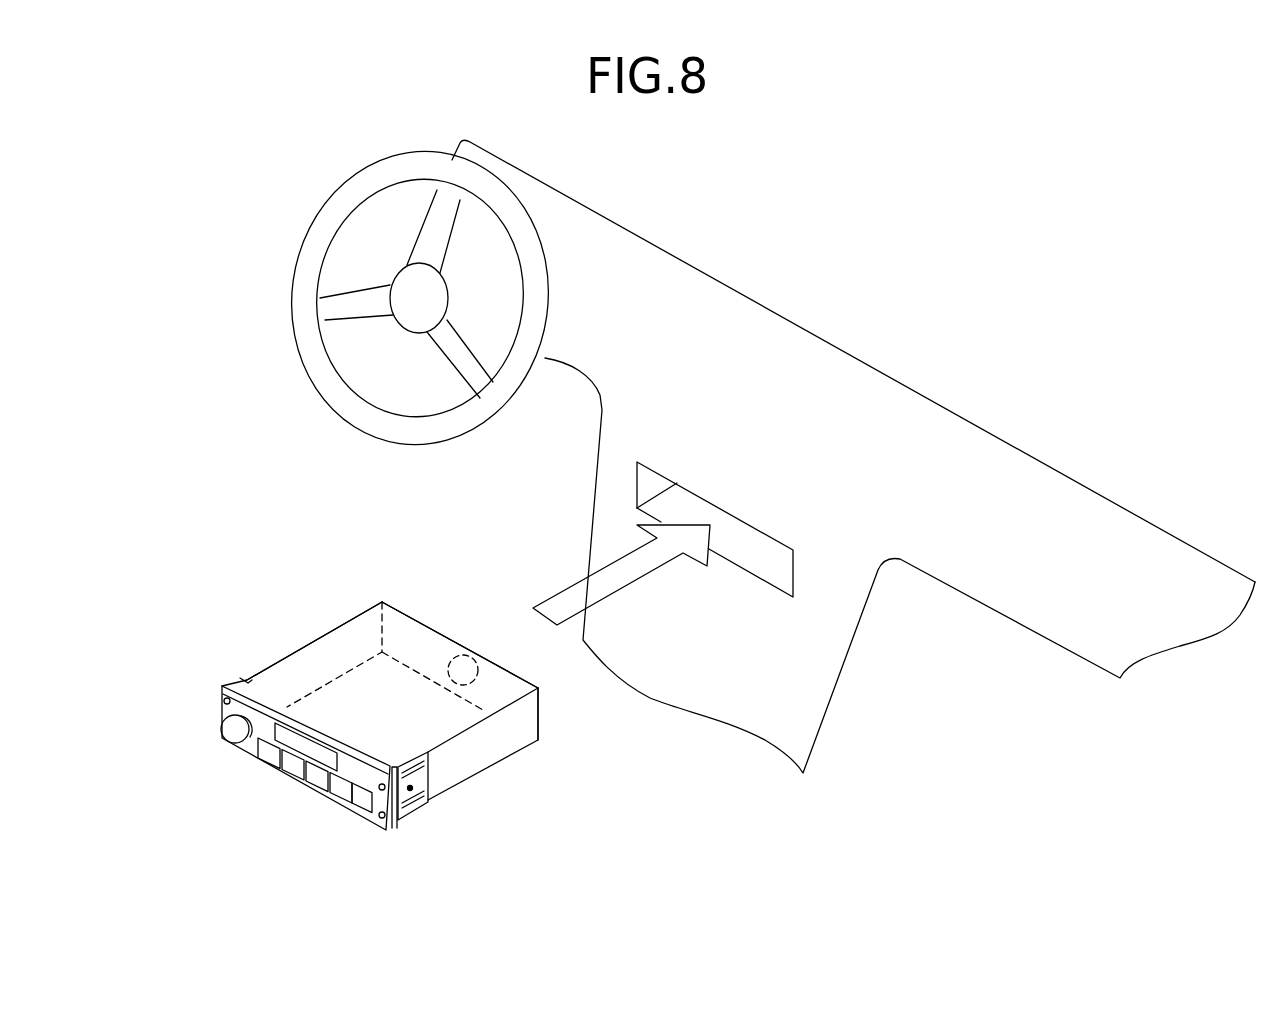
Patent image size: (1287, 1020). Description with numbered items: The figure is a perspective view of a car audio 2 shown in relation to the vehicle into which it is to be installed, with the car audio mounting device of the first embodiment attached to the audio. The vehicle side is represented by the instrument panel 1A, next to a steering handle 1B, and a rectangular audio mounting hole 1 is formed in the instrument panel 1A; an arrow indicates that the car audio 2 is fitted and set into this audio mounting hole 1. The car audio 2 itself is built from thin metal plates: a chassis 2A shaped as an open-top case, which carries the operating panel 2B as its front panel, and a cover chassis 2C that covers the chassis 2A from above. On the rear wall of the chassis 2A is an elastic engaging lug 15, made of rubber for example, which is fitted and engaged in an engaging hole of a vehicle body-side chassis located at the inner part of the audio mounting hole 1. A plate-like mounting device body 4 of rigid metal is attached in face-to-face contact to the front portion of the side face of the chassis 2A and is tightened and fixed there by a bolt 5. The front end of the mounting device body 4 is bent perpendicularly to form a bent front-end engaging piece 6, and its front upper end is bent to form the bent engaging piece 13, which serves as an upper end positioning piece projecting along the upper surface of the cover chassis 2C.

The audio mounting hole 1 is at (750, 553).
The instrument panel 1A is at (710, 288).
The steering handle 1B is at (330, 383).
The car audio 2 is at (404, 730).
The chassis 2A is at (508, 735).
The operating panel 2B is at (363, 780).
The chassis 2C is at (505, 688).
The mounting device body 4 is at (423, 780).
The bolt 5 is at (415, 795).
The bent front-end engaging piece 6 is at (409, 825).
The bent engaging piece 13 is at (397, 767).
The elastic engaging lug 15 is at (487, 653).